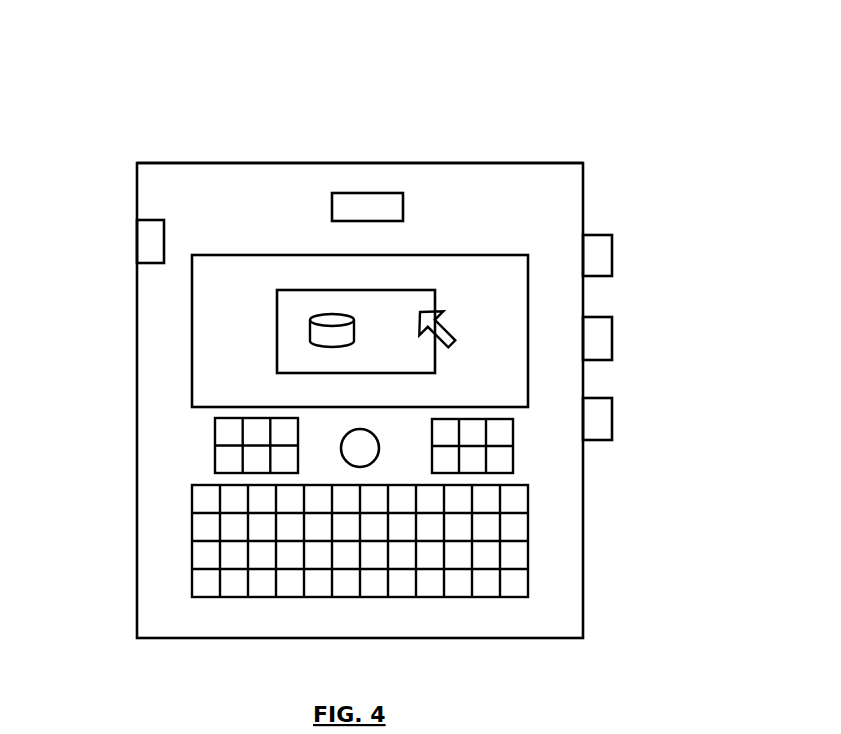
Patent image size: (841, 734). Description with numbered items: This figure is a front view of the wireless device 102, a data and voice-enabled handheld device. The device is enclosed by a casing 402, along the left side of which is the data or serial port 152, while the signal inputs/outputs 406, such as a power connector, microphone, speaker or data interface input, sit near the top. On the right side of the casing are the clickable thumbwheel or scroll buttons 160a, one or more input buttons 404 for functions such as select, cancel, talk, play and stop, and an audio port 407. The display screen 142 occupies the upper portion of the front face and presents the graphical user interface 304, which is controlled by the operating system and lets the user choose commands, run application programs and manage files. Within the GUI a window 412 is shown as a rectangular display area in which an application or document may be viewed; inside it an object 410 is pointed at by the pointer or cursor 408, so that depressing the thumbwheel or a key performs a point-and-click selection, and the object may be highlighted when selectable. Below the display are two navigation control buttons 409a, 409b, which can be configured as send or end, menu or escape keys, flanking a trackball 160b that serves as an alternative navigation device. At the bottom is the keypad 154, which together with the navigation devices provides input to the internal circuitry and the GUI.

The wireless device 102 is at (549, 78).
The casing 402 is at (248, 193).
The signal inputs/outputs 406 is at (373, 193).
The data or serial port 152 is at (150, 242).
The display screen 142 is at (192, 290).
The graphical user interface 304 is at (207, 317).
The object 410 is at (310, 333).
The window 412 is at (403, 305).
The pointer or cursor 408 is at (452, 346).
The clickable thumbwheel or scroll buttons 160a is at (612, 262).
The input buttons 404 is at (612, 345).
The audio port 407 is at (612, 430).
The navigation control button 409a is at (215, 428).
The navigation control button 409b is at (513, 440).
The trackball 160b is at (372, 460).
The keypad 154 is at (530, 525).